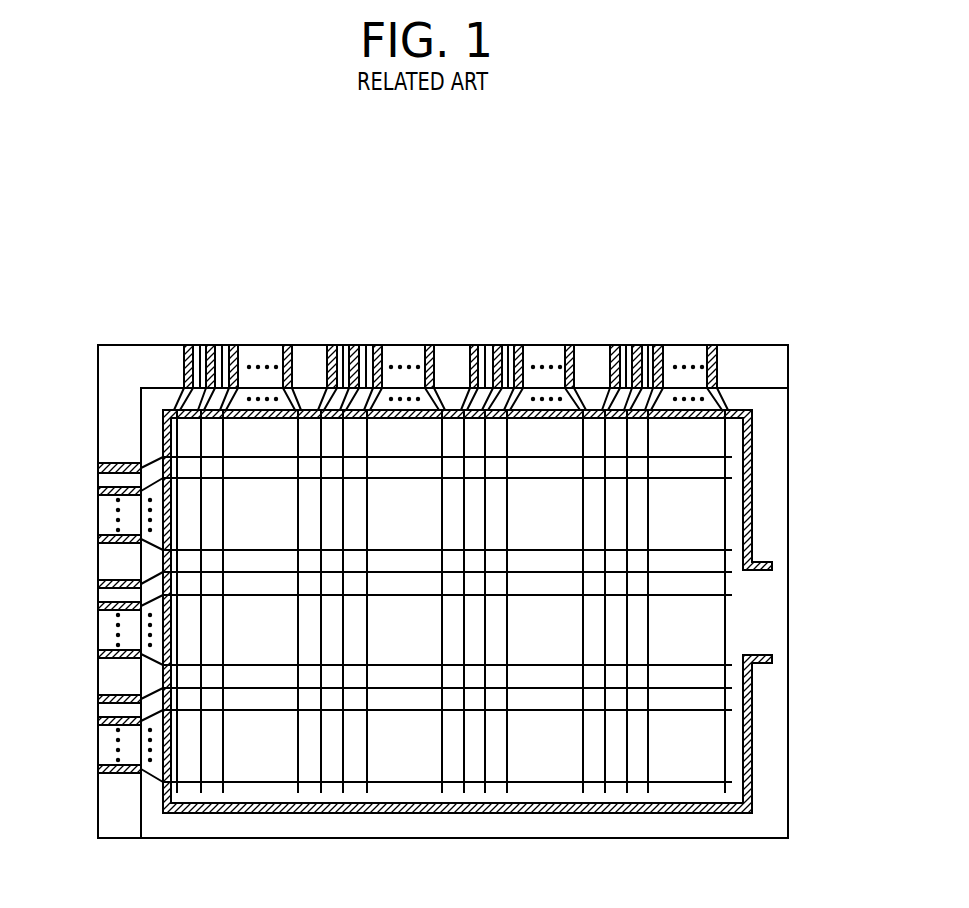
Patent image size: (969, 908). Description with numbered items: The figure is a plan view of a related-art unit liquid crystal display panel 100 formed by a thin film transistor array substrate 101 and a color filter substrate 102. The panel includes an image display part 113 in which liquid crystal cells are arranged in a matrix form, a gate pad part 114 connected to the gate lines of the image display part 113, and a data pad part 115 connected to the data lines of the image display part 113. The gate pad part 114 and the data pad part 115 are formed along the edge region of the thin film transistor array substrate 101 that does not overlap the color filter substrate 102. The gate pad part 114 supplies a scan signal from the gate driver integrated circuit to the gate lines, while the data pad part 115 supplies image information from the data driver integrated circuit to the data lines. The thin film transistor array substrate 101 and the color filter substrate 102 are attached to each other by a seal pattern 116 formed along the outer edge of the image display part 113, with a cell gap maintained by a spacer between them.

The liquid crystal display panel 100 is at (124, 329).
The thin film transistor array substrate 101 is at (777, 368).
The color filter substrate 102 is at (777, 427).
The image display part 113 is at (422, 527).
The gate pad part 114 is at (88, 790).
The data pad part 115 is at (722, 330).
The seal pattern 116 is at (745, 492).